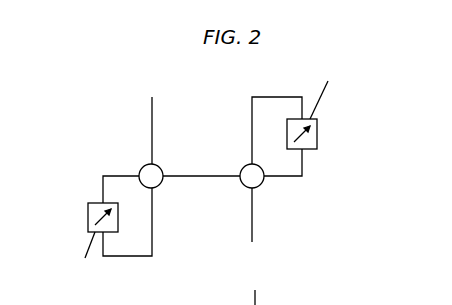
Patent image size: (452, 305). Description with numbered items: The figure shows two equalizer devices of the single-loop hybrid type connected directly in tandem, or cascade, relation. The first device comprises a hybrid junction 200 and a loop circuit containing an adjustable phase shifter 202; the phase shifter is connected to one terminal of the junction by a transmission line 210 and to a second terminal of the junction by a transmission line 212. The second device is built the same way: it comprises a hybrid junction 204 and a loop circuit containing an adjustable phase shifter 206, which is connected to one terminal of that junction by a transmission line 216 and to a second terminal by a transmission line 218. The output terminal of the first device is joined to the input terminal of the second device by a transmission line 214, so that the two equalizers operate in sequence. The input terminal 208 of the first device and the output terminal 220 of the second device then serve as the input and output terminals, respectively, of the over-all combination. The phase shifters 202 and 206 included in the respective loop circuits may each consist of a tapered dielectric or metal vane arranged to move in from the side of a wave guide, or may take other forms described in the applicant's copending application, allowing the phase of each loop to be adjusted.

The hybrid junction 200 is at (160, 167).
The adjustable phase shifter 202 is at (87, 217).
The hybrid junction 204 is at (262, 185).
The adjustable phase shifter 206 is at (319, 136).
The input terminal 208 is at (153, 113).
The transmission line 210 is at (119, 175).
The transmission line 212 is at (153, 238).
The transmission line 214 is at (172, 178).
The transmission line 216 is at (251, 137).
The transmission line 218 is at (305, 161).
The output terminal 220 is at (253, 231).